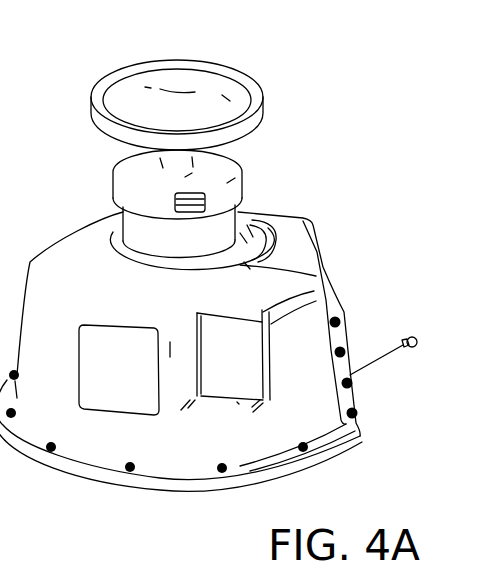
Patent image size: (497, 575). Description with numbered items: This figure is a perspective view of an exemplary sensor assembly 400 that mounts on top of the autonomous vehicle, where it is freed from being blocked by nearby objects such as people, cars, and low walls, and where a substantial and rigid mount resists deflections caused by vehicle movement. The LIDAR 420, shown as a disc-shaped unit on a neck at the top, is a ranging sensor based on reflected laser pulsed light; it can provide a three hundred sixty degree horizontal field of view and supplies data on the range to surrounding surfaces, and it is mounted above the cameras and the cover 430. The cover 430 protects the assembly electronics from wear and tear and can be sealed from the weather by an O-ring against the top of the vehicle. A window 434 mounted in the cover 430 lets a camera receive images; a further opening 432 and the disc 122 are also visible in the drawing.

The disc / cap 122 is at (228, 68).
The sensor assembly 400 is at (348, 198).
The LIDAR 420 is at (250, 207).
The cover 430 is at (302, 262).
The opening 432 is at (226, 384).
The window 434 is at (107, 333).